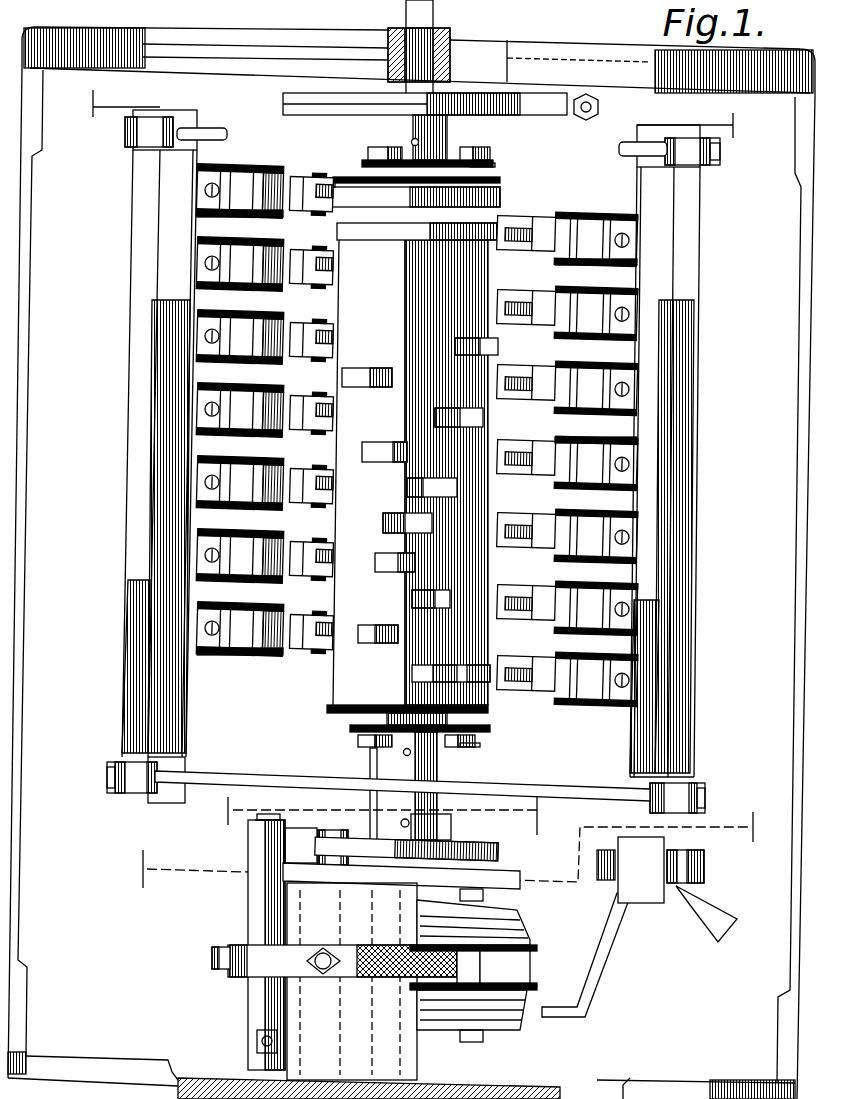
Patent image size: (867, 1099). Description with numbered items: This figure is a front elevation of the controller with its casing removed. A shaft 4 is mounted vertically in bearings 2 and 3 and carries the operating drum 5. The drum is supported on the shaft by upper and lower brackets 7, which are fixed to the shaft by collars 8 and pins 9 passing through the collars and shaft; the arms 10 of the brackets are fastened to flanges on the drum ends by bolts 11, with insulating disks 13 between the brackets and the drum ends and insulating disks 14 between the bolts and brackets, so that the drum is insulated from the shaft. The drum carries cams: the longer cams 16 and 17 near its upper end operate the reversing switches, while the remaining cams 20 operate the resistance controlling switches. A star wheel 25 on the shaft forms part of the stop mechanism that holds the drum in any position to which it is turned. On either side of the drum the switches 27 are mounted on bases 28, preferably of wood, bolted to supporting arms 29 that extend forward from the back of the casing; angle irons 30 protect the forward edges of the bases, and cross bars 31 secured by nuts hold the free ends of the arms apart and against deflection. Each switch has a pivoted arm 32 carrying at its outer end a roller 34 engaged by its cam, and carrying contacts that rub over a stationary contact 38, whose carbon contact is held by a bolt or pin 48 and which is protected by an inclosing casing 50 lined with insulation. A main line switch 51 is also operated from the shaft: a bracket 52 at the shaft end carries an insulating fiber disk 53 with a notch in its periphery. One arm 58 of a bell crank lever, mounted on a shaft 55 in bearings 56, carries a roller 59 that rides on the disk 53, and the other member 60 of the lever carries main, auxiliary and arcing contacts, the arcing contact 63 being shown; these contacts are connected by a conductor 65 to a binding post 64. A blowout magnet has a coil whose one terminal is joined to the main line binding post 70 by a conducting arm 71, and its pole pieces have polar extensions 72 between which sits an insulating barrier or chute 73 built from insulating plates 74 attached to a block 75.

The bearing 2 is at (440, 40).
The bearing 3 is at (490, 758).
The shaft 4 is at (423, 62).
The operating drum 5 is at (490, 270).
The bracket 7 is at (500, 167).
The collar 8 is at (441, 145).
The pin 9 is at (411, 141).
The arm 10 is at (368, 160).
The bolt 11 is at (482, 165).
The insulating disk 13 is at (503, 184).
The insulating disk 14 is at (368, 157).
The cam 16 is at (385, 192).
The cam 17 is at (385, 232).
The cam 20 is at (380, 388).
The star wheel 25 is at (290, 92).
The switch 27 is at (297, 399).
The base 28 is at (165, 382).
The supporting arm 29 is at (145, 138).
The angle iron 30 is at (140, 260).
The cross bar 31 is at (627, 154).
The arm 32 is at (294, 322).
The roller 34 is at (317, 262).
The stationary contact 38 is at (197, 482).
The bolt or pin 48 is at (197, 337).
The inclosing casing 50 is at (236, 668).
The main line switch 51 is at (401, 883).
The bracket 52 is at (441, 828).
The disk 53 is at (503, 852).
The shaft 55 is at (270, 818).
The bearing 56 is at (247, 904).
The arm of bell crank lever 58 is at (303, 838).
The roller 59 is at (350, 858).
The member of bell crank lever 60 is at (343, 981).
The arcing contact 63 is at (468, 967).
The binding post 64 is at (210, 957).
The conductor 65 is at (230, 970).
The main line binding post 70 is at (672, 866).
The conducting arm 71 is at (594, 967).
The polar extension 72 is at (473, 946).
The insulating barrier or chute 73 is at (510, 982).
The insulating plate or disk 74 is at (500, 950).
The block 75 is at (473, 1042).